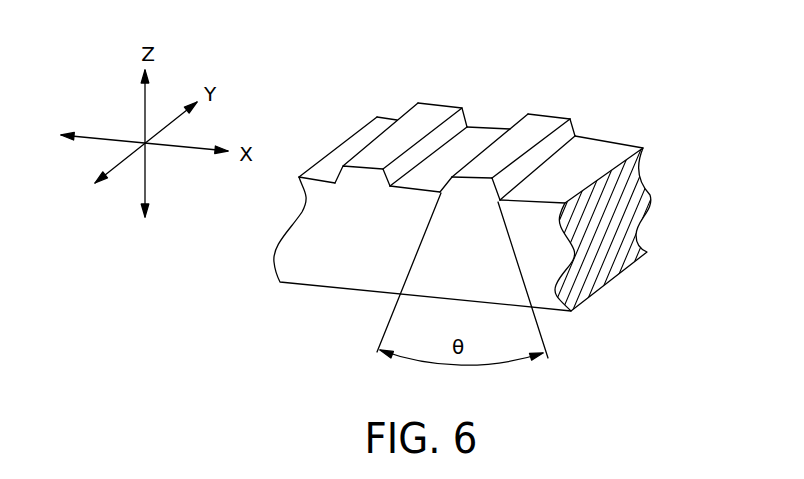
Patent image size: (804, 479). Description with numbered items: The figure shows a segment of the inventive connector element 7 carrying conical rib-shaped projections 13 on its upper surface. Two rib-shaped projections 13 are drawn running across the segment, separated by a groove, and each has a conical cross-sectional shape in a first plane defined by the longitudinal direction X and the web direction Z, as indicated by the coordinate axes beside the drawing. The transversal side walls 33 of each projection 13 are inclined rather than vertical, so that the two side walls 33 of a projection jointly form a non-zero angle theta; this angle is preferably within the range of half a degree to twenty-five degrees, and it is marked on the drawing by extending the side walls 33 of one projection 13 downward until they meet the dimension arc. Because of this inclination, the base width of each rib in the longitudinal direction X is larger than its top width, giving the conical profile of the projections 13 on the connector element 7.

The connector element 7 is at (504, 184).
The rib-shaped projection 13 is at (432, 112).
The transversal side wall 33 is at (553, 147).